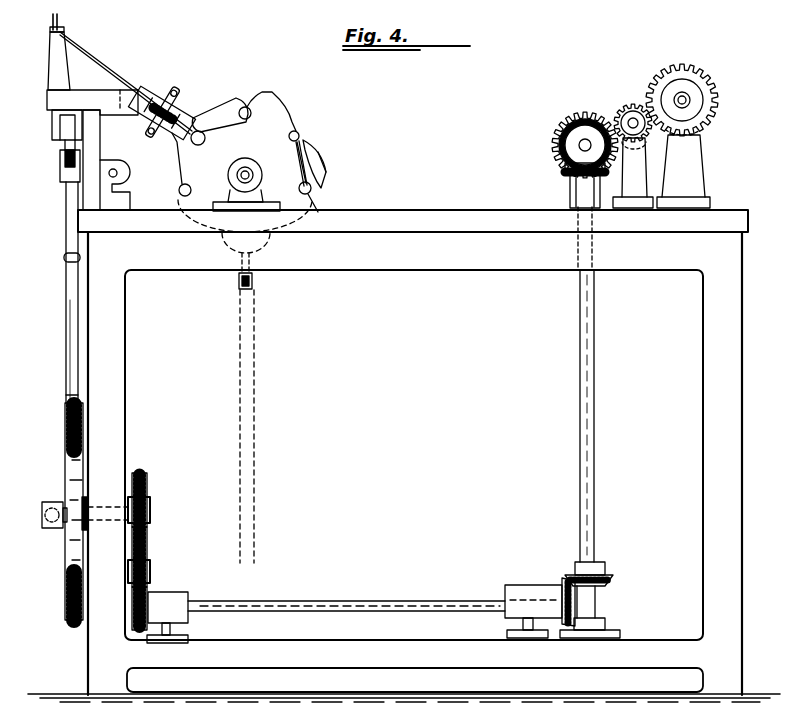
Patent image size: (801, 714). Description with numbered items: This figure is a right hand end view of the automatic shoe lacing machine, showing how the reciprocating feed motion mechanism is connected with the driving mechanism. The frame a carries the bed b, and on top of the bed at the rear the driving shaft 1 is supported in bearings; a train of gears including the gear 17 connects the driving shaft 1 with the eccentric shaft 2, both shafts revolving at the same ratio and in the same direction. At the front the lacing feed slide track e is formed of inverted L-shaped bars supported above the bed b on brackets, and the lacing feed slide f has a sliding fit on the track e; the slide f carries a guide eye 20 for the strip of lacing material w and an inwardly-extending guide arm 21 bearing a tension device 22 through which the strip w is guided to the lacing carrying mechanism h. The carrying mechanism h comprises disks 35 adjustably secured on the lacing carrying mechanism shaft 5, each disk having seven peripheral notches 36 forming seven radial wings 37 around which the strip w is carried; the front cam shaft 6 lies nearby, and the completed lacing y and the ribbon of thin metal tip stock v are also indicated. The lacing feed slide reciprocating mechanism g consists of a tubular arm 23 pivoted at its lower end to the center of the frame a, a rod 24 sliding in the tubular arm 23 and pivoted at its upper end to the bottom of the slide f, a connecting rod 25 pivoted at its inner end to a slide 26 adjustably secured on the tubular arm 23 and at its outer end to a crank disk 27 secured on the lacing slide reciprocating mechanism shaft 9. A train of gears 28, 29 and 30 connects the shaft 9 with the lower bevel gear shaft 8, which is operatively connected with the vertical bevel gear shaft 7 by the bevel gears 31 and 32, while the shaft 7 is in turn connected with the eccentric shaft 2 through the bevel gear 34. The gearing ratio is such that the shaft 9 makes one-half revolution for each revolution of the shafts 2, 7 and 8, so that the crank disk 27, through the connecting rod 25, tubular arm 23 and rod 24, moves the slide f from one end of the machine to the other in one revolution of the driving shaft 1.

The driving shaft 1 is at (682, 100).
The eccentric shaft 2 is at (578, 147).
The lacing carrying mechanism shaft 5 is at (238, 175).
The front cam shaft 6 is at (122, 178).
The vertical bevel gear shaft 7 is at (580, 386).
The lower bevel gear shaft 8 is at (372, 602).
The lacing slide reciprocating mechanism shaft 9 is at (110, 498).
The gear 17 is at (574, 122).
The guide eye 20 is at (62, 33).
The guide arm 21 is at (172, 133).
The tension device 22 is at (175, 114).
The tubular arm 23 is at (67, 350).
The rod 24 is at (66, 219).
The connecting rod 25 is at (50, 502).
The slide 26 is at (628, 106).
The crank disk 27 is at (72, 453).
The gear 28 is at (148, 482).
The gear 29 is at (148, 558).
The gear 30 is at (137, 608).
The bevel gear 31 is at (566, 625).
The bevel gear 32 is at (609, 582).
The bevel gear 34 is at (560, 136).
The disk 35 is at (263, 132).
The peripheral notch 36 is at (245, 107).
The radial wing 37 is at (322, 160).
The frame a is at (443, 270).
The bed b is at (432, 212).
The lacing feed slide track e is at (50, 130).
The lacing feed slide f is at (47, 93).
The lacing feed slide reciprocating mechanism g is at (68, 393).
The lacing carrying mechanism h is at (323, 176).
The ribbon of thin metal tip stock v is at (238, 284).
The strip of lacing material w is at (90, 64).
The completed lacing y is at (240, 380).